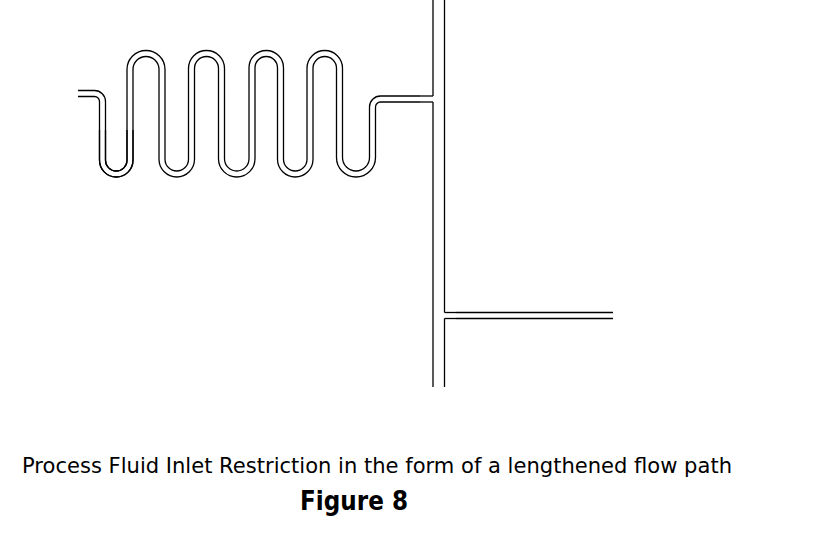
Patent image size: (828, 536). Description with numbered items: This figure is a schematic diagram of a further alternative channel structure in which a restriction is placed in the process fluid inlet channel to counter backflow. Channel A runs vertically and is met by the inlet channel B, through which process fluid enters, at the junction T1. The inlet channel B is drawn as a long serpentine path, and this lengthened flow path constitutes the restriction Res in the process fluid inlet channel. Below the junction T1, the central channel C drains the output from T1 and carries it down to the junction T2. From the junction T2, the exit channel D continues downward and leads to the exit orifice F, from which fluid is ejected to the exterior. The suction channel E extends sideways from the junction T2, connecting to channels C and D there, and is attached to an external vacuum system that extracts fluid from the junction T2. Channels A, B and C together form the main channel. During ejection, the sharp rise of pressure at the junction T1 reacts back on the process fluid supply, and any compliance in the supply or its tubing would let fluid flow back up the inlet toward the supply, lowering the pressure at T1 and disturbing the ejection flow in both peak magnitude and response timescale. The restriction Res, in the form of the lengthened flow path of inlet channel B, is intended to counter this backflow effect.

The channel A is at (453, 49).
The inlet channel B is at (249, 88).
The central channel C is at (424, 207).
The exit channel D is at (455, 350).
The suction channel E is at (534, 297).
The exit orifice F is at (427, 397).
The junction T1 is at (455, 96).
The junction T2 is at (424, 308).
The restriction Res is at (214, 205).